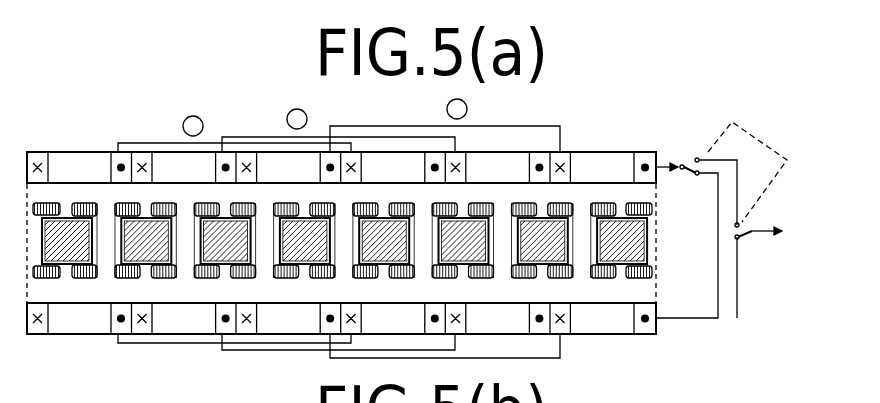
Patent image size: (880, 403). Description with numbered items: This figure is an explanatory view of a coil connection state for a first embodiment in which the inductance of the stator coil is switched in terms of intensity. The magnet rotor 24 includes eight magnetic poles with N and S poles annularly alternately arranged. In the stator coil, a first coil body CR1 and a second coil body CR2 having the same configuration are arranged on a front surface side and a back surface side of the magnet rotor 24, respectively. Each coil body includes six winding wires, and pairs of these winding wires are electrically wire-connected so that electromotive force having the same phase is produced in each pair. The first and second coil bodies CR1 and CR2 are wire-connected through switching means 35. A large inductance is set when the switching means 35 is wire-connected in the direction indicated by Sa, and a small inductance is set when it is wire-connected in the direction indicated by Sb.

The first coil body CR1 is at (75, 151).
The second coil body CR2 is at (613, 334).
The magnet rotor 24 is at (646, 285).
The switching means 35 is at (681, 165).